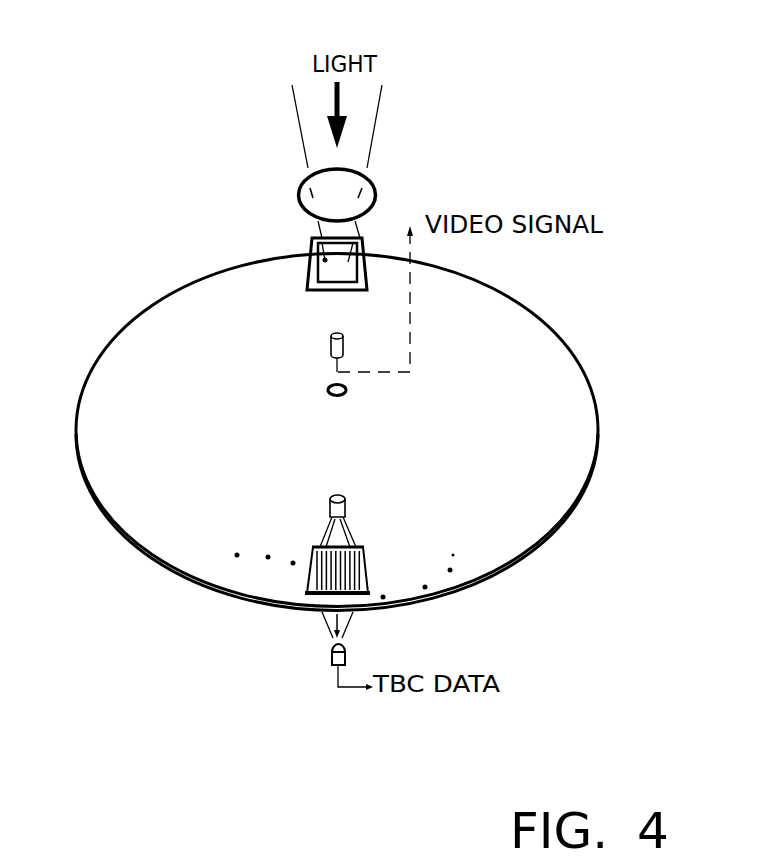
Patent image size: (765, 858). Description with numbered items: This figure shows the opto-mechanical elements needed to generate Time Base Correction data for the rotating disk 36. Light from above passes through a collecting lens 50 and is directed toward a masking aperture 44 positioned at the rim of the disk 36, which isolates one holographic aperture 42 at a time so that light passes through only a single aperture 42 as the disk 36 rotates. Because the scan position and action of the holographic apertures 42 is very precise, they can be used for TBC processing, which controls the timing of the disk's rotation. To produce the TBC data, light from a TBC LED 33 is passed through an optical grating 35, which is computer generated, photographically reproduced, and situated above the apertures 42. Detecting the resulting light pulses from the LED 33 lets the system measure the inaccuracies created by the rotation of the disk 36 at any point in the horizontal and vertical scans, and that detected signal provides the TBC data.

The TBC LED 33 is at (329, 511).
The optical grating 35 is at (316, 585).
The disk 36 is at (167, 332).
The holographic apertures 42 is at (427, 588).
The masking aperture 44 is at (322, 258).
The collecting lens 50 is at (297, 187).